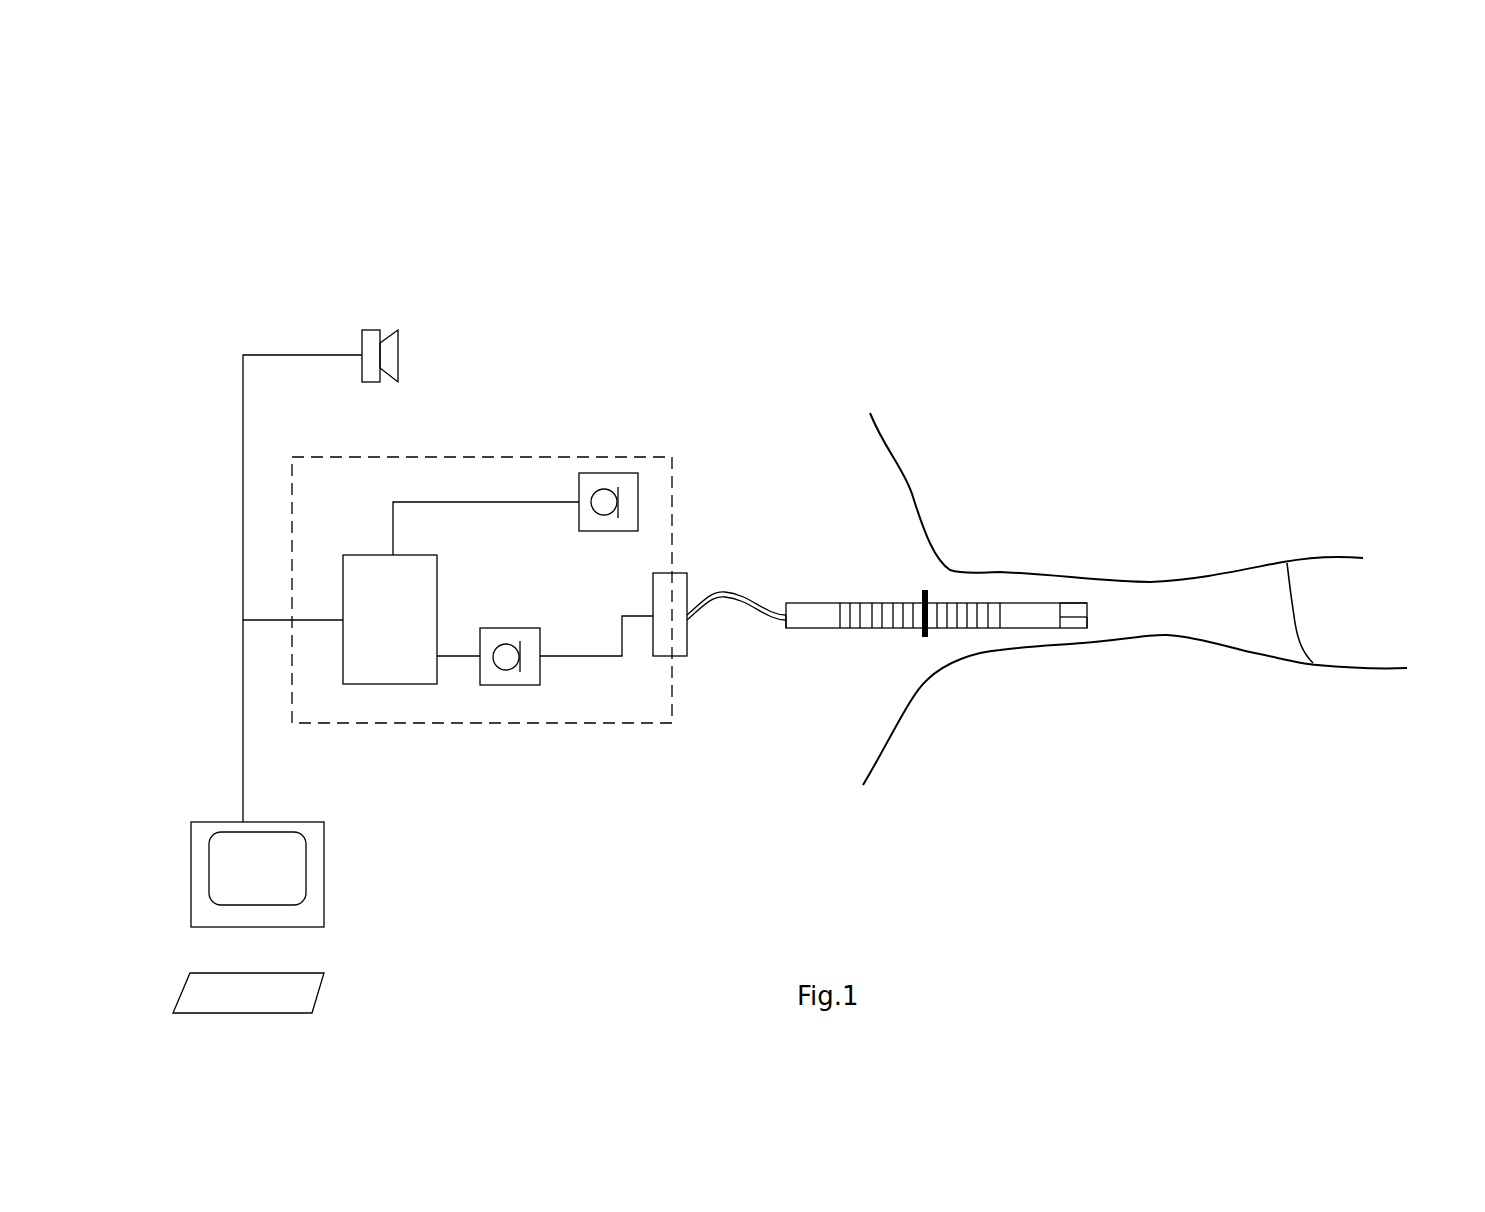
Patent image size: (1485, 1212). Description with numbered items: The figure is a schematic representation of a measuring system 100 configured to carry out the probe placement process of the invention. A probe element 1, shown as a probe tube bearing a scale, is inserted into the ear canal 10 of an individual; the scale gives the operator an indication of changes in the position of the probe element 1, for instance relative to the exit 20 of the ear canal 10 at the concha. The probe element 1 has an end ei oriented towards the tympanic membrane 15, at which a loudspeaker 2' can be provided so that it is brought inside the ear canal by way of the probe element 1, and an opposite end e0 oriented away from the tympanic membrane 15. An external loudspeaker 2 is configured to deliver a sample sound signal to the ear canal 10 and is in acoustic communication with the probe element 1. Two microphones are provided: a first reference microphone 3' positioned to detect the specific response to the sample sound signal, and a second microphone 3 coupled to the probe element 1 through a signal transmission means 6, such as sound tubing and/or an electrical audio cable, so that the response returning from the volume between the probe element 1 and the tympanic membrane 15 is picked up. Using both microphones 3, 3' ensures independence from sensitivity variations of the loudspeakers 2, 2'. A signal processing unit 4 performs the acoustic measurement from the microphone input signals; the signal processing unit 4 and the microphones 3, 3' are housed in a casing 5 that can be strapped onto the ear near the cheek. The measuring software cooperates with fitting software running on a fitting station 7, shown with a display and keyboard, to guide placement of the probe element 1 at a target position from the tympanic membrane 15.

The measuring system 100 is at (182, 170).
The probe element 1 is at (856, 571).
The loudspeaker 2 is at (452, 371).
The loudspeaker 2' is at (1141, 531).
The second microphone 3 is at (553, 720).
The first reference microphone 3' is at (659, 447).
The signal processing unit 4 is at (410, 652).
The casing 5 is at (593, 455).
The signal transmission means 6 is at (733, 594).
The fitting station 7 is at (293, 885).
The ear canal 10 is at (1205, 620).
The tympanic membrane 15 is at (1297, 635).
The exit of the ear canal 20 is at (913, 500).
The end of the probe element e0 is at (782, 622).
The end of the probe element ei is at (1083, 622).